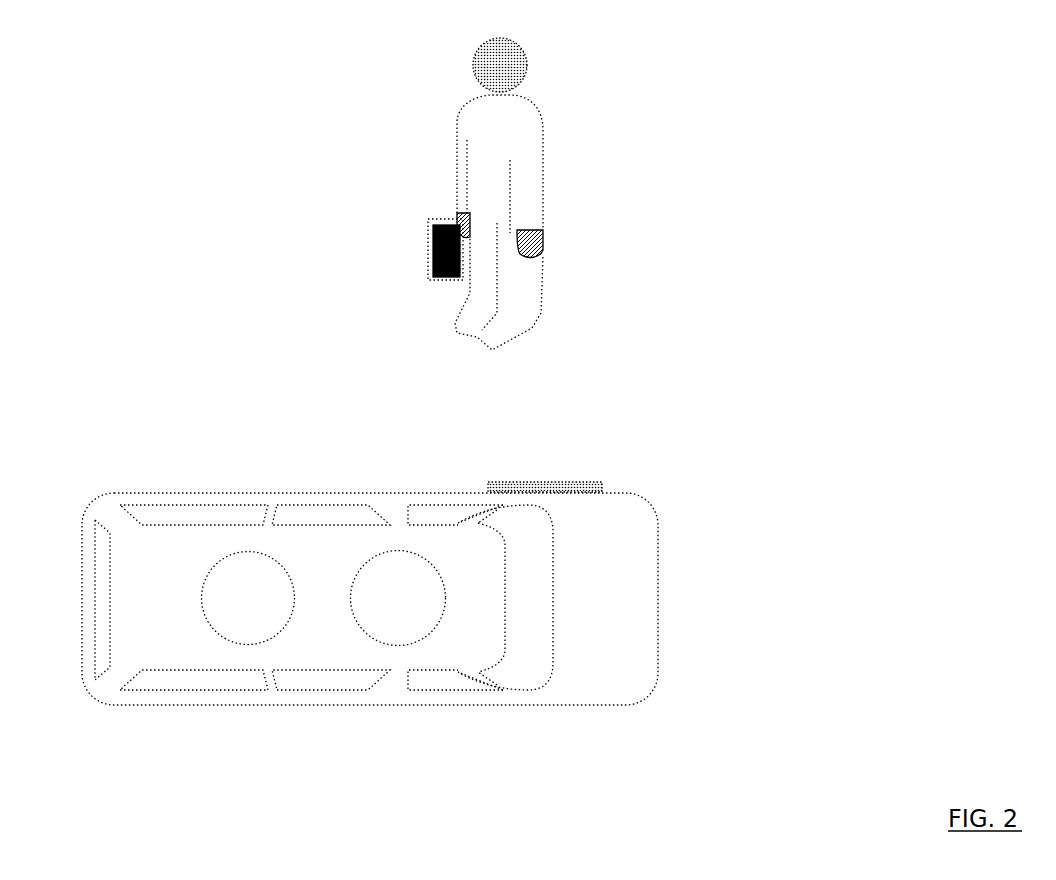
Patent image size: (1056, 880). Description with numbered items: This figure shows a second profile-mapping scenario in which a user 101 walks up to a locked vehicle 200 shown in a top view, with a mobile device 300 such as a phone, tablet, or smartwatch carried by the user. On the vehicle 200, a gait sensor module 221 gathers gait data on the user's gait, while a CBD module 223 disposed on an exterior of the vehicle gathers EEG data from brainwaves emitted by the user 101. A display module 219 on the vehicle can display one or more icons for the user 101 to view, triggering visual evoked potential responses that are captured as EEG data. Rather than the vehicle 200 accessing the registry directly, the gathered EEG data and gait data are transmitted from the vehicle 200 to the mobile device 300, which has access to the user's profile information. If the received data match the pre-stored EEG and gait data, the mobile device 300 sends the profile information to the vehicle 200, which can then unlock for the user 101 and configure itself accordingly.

The user 101 is at (520, 136).
The mobile device 300 is at (433, 254).
The vehicle 200 is at (616, 553).
The CBD module 223 is at (237, 593).
The gait sensor module 221 is at (396, 593).
The display module 219 is at (535, 482).